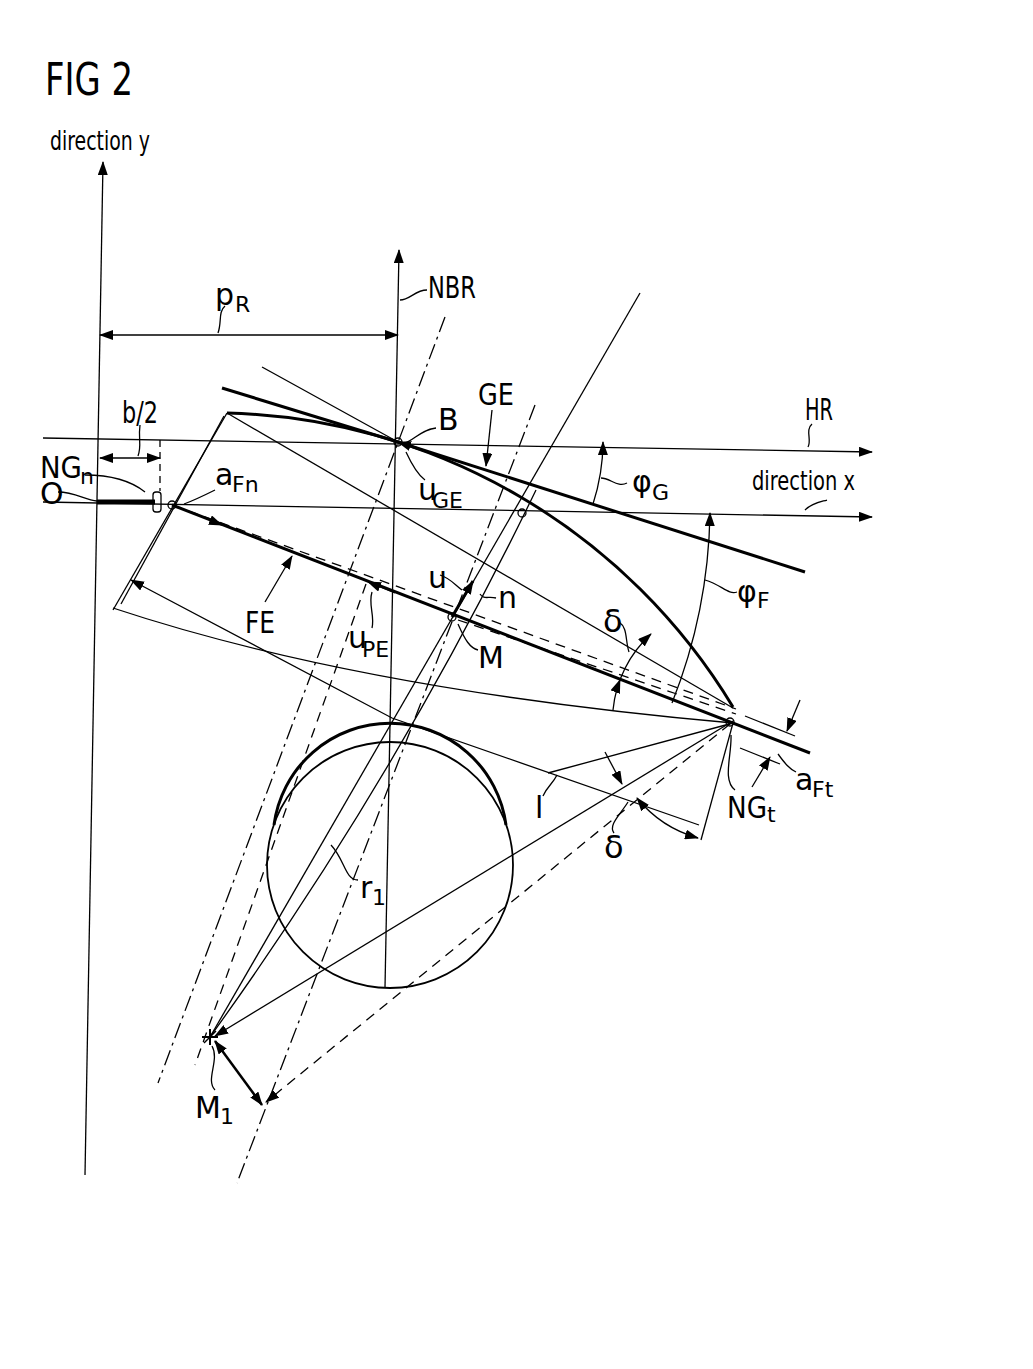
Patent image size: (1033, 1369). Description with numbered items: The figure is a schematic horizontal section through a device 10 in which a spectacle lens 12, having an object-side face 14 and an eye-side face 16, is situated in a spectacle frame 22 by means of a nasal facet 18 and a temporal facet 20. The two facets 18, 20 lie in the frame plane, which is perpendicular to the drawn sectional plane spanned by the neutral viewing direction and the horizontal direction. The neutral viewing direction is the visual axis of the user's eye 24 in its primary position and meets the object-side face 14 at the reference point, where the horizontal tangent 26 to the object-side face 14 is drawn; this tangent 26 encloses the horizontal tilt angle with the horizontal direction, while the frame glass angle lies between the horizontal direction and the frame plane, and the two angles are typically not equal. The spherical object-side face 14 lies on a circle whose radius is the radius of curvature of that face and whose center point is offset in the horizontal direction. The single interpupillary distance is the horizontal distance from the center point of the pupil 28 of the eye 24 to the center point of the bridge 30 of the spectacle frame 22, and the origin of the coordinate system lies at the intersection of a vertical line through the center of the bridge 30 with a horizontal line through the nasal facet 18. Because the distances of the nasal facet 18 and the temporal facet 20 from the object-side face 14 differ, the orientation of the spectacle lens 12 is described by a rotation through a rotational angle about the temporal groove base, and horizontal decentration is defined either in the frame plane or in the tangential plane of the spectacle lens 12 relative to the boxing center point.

The device 10 is at (730, 309).
The spectacle lens 12 is at (712, 688).
The object-side face 14 is at (673, 624).
The eye-side face 16 is at (212, 650).
The nasal facet 18 is at (173, 512).
The temporal facet 20 is at (738, 714).
The spectacle frame 22 is at (148, 512).
The eye 24 is at (470, 958).
The horizontal tangent 26 is at (793, 570).
The pupil 28 is at (415, 724).
The bridge 30 is at (126, 506).